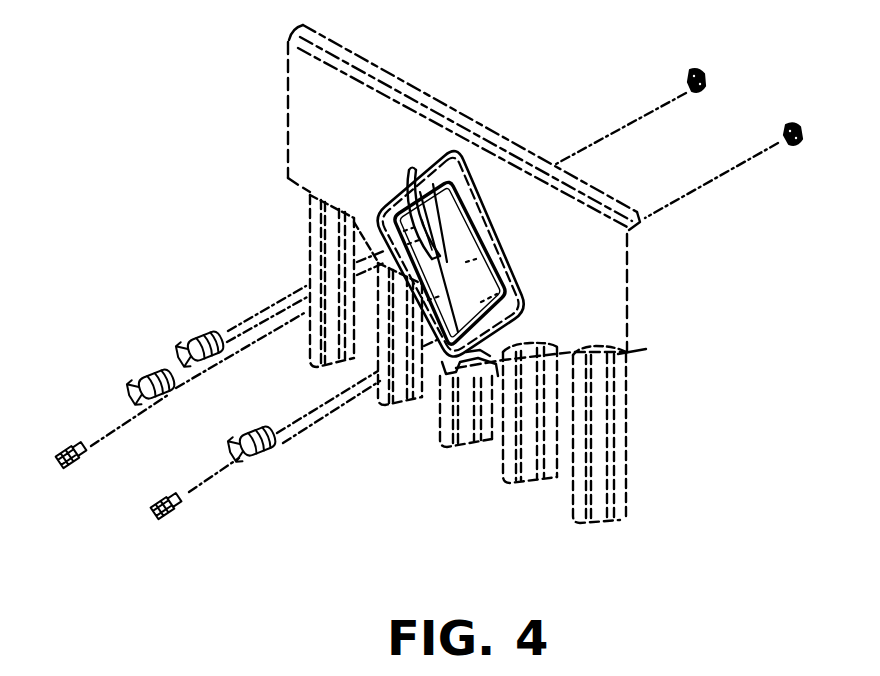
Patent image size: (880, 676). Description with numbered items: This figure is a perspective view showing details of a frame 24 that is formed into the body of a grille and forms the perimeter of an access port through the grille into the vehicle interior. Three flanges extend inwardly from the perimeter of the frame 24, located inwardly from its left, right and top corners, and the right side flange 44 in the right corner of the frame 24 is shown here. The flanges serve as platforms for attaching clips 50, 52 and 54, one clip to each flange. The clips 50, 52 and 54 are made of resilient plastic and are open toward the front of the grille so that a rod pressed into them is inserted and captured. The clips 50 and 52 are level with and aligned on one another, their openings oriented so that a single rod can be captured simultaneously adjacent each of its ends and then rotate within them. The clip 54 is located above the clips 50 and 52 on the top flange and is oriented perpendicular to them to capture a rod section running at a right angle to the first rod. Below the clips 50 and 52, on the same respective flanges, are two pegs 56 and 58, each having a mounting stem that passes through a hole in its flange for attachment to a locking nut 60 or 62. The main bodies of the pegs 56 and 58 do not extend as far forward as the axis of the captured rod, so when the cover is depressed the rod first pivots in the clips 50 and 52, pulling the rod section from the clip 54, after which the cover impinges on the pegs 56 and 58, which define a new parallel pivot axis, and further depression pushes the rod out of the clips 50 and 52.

The frame 24 is at (440, 283).
The right side flange 44 is at (411, 186).
The clip 50 is at (276, 452).
The clip 52 is at (149, 371).
The clip 54 is at (207, 333).
The peg 56 is at (176, 518).
The peg 58 is at (64, 448).
The locking nut 60 is at (802, 144).
The locking nut 62 is at (694, 68).